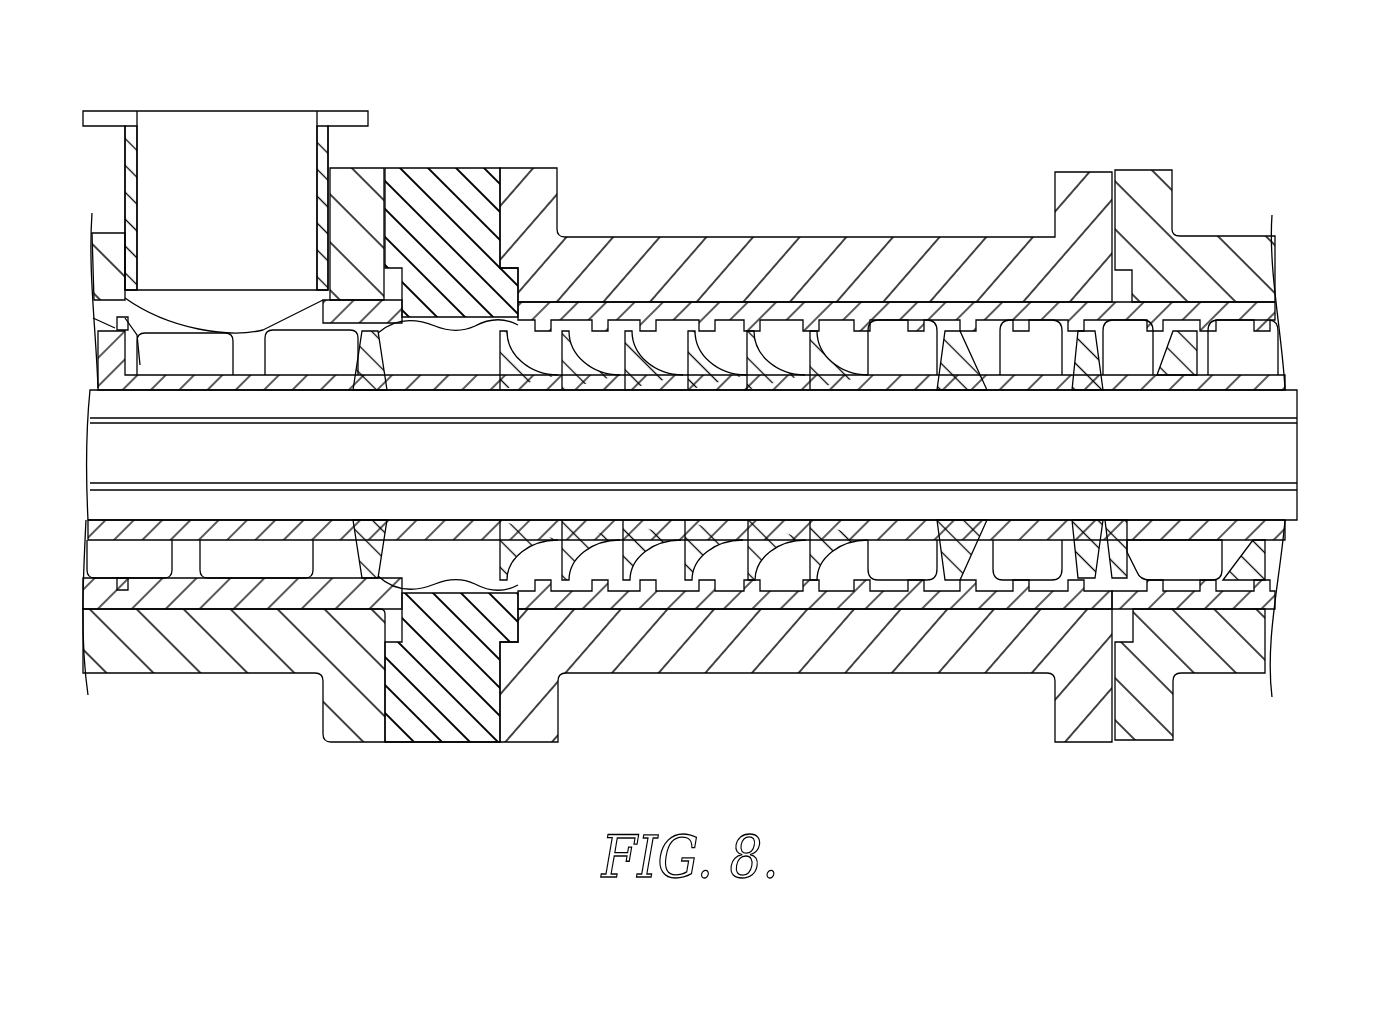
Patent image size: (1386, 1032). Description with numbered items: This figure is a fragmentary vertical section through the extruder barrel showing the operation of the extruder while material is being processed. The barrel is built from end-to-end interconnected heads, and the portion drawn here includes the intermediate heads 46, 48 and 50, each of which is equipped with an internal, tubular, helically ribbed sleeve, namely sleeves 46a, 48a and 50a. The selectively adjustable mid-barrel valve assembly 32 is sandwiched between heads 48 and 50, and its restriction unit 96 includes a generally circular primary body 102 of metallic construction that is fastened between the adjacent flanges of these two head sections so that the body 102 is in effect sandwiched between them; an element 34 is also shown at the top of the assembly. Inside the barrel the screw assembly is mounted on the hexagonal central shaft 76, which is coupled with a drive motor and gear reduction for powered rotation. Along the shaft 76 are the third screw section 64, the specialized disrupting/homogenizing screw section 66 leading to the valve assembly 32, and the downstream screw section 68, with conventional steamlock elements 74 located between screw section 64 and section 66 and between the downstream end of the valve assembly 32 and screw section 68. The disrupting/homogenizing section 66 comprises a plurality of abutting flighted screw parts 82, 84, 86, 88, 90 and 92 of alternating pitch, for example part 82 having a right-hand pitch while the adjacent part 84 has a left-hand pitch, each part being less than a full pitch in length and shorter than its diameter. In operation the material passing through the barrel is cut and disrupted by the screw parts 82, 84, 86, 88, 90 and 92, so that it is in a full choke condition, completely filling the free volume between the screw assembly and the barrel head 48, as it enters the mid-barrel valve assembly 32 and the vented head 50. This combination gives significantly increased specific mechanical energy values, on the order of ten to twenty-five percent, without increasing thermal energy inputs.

The mid-barrel valve assembly 32 is at (455, 150).
The cap 34 is at (178, 128).
The intermediate head 46 is at (1210, 255).
The helically ribbed sleeve 46a is at (1252, 597).
The intermediate head 48 is at (728, 248).
The helically ribbed sleeve 48a is at (1013, 600).
The vented head 50 is at (255, 653).
The helically ribbed sleeve 50a is at (160, 596).
The third screw section 64 is at (1275, 378).
The disrupting/homogenizing screw section 66 is at (985, 337).
The downstream screw section 68 is at (100, 366).
The steamlock element 74 is at (370, 352).
The hexagonal central shaft 76 is at (1290, 442).
The flighted screw part 82 is at (827, 373).
The flighted screw part 84 is at (760, 538).
The flighted screw part 86 is at (741, 307).
The flighted screw part 88 is at (623, 540).
The flighted screw part 90 is at (573, 360).
The flighted screw part 92 is at (500, 537).
The restriction unit 96 is at (413, 744).
The primary body 102 is at (468, 715).